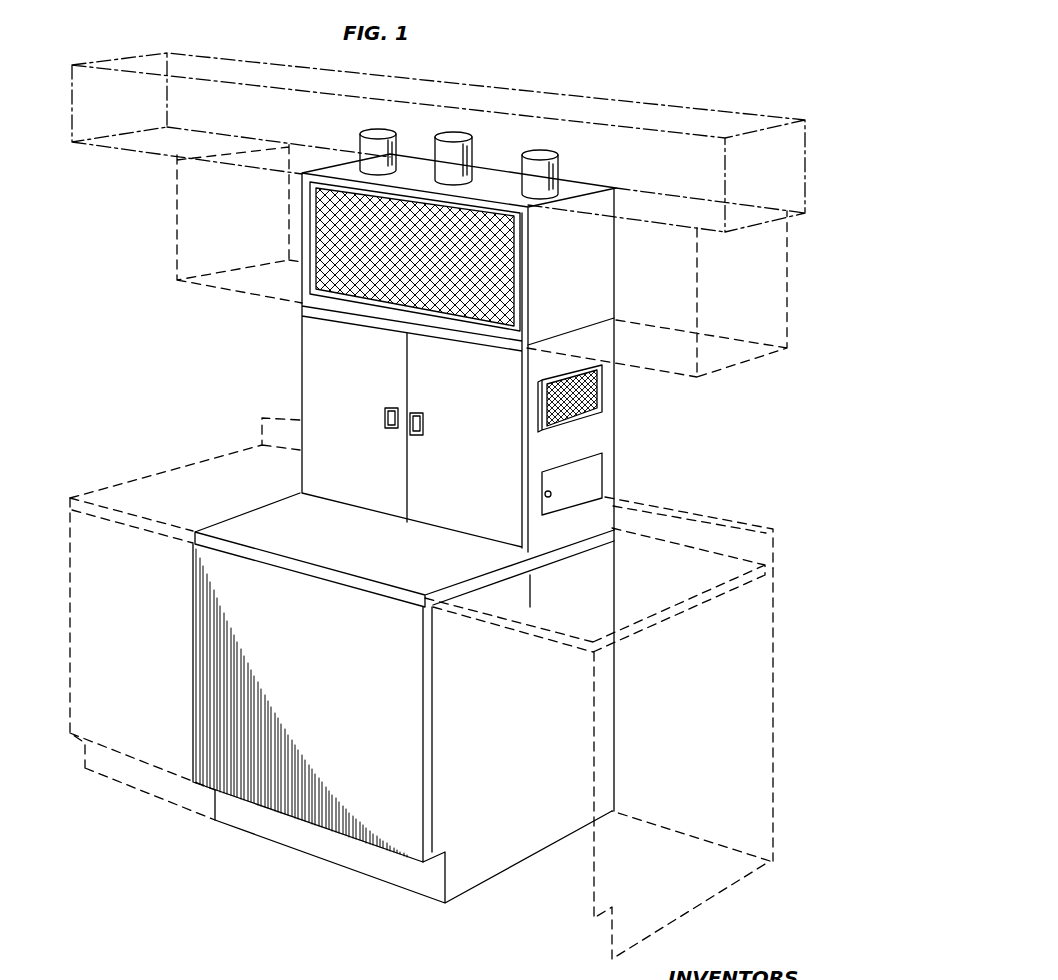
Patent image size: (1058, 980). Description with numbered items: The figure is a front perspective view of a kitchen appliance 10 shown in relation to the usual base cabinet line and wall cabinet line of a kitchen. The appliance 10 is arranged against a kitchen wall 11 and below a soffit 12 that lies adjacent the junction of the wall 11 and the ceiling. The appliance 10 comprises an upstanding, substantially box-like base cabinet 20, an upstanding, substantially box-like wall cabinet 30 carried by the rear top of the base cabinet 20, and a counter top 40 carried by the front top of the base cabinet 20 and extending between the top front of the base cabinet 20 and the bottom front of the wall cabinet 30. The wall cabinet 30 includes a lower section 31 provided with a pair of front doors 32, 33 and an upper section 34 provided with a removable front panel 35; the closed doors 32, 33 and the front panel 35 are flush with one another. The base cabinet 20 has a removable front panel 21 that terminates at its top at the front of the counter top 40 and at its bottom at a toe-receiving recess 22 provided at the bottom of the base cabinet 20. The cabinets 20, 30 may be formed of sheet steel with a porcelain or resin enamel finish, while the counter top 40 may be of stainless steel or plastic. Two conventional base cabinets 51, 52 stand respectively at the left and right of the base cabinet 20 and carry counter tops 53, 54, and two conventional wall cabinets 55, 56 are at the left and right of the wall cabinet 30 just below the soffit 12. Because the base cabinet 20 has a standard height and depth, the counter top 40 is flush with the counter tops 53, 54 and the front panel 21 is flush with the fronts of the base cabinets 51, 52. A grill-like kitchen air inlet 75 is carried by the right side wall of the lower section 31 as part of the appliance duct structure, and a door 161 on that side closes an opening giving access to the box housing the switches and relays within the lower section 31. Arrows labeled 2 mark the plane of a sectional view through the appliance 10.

The section line indicator 2 is at (524, 180).
The kitchen appliance 10 is at (278, 361).
The kitchen wall 11 is at (748, 438).
The soffit 12 is at (696, 176).
The base cabinet 20 is at (510, 711).
The removable front panel 21 is at (410, 743).
The toe-receiving recess 22 is at (438, 853).
The wall cabinet 30 is at (622, 317).
The lower section 31 is at (609, 422).
The front door 32 is at (376, 476).
The front door 33 is at (447, 476).
The upper section 34 is at (608, 257).
The removable front panel 35 is at (520, 258).
The counter top 40 is at (426, 569).
The conventional base cabinet 51 is at (82, 582).
The conventional base cabinet 52 is at (697, 896).
The counter top 53 is at (155, 492).
The counter top 54 is at (640, 610).
The conventional wall cabinet 55 is at (187, 238).
The conventional wall cabinet 56 is at (713, 358).
The kitchen air inlet 75 is at (547, 381).
The door 161 is at (583, 487).